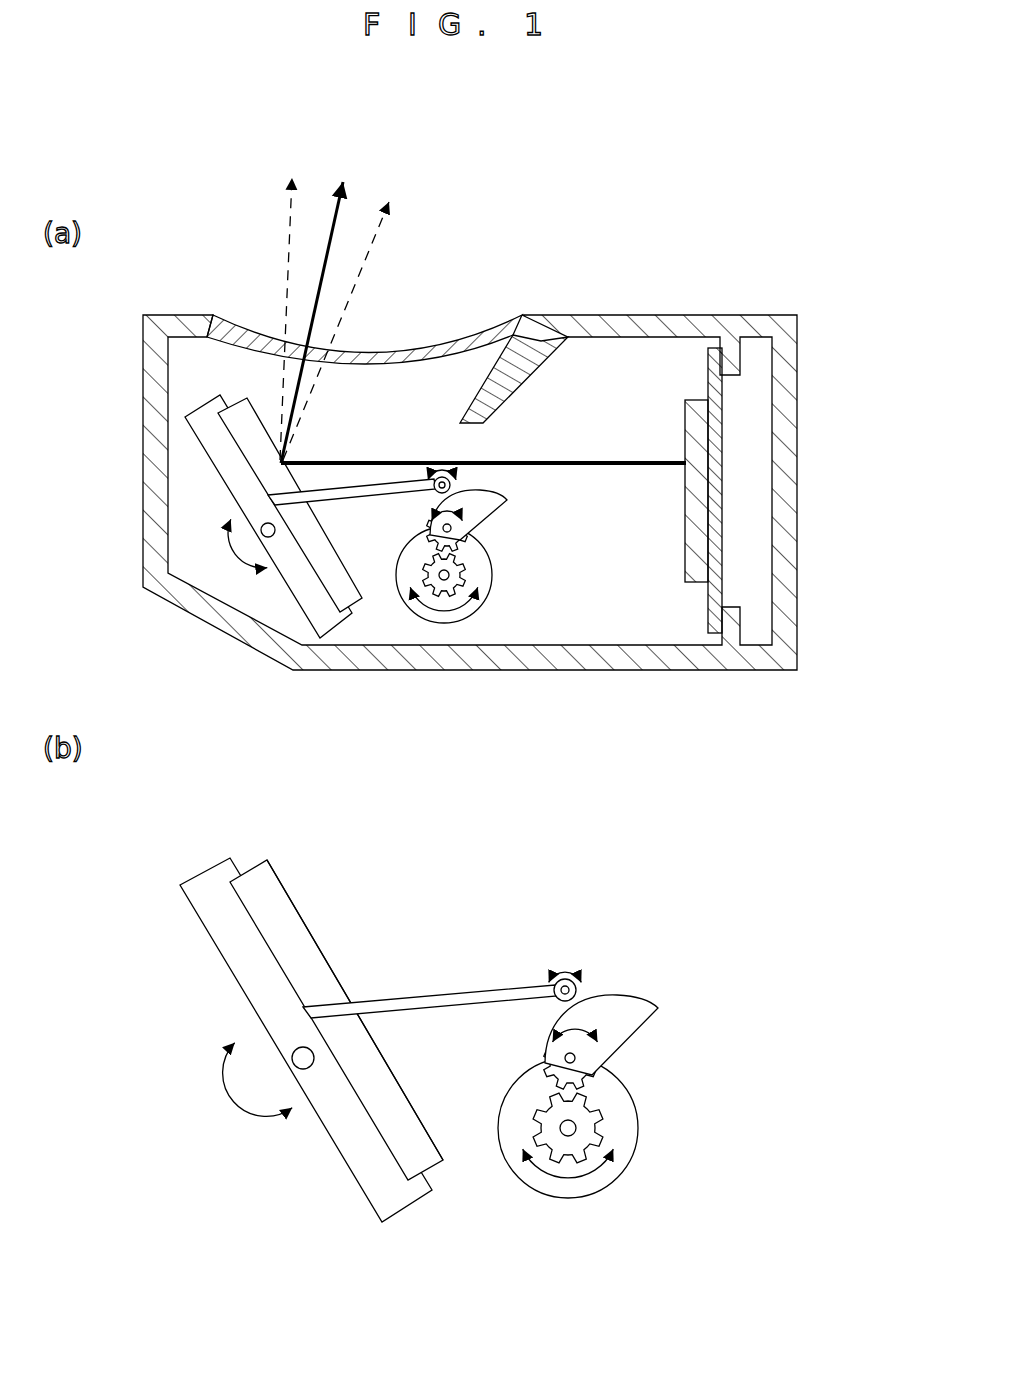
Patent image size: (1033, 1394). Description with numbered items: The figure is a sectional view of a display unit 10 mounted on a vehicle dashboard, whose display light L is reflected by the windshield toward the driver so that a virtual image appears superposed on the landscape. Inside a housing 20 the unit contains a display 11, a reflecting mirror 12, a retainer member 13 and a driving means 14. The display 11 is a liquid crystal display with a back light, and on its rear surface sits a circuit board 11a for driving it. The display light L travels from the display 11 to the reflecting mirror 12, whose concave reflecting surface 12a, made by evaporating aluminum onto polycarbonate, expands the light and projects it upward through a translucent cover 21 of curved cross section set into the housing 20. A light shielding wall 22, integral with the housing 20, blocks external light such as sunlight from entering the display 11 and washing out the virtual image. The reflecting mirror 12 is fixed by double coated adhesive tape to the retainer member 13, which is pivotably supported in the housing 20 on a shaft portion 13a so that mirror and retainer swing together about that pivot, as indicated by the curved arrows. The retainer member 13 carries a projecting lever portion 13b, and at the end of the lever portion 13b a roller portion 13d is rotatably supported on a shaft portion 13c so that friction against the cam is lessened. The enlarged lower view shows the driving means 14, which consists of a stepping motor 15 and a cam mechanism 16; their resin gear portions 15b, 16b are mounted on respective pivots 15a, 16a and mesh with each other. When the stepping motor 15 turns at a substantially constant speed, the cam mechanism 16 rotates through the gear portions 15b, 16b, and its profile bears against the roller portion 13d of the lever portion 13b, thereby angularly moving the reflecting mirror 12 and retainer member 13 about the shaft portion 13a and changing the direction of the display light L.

The display unit 10 is at (716, 262).
The display 11 is at (690, 553).
The circuit board 11a is at (708, 385).
The reflecting mirror 12 is at (324, 528).
The reflecting surface 12a is at (288, 920).
The retainer member 13 is at (344, 620).
The shaft portion 13a is at (305, 1069).
The lever portion 13b is at (433, 1000).
The shaft portion 13c is at (560, 968).
The roller portion 13d is at (573, 982).
The driving means 14 is at (581, 850).
The stepping motor 15 is at (559, 868).
The pivot 15a is at (576, 1130).
The gear portion 15b is at (586, 1150).
The cam mechanism 16 is at (571, 795).
The pivot 16a is at (550, 1046).
The gear portion 16b is at (545, 1062).
The housing 20 is at (590, 666).
The translucent cover 21 is at (263, 333).
The light shielding wall 22 is at (512, 387).
The display light L is at (629, 466).